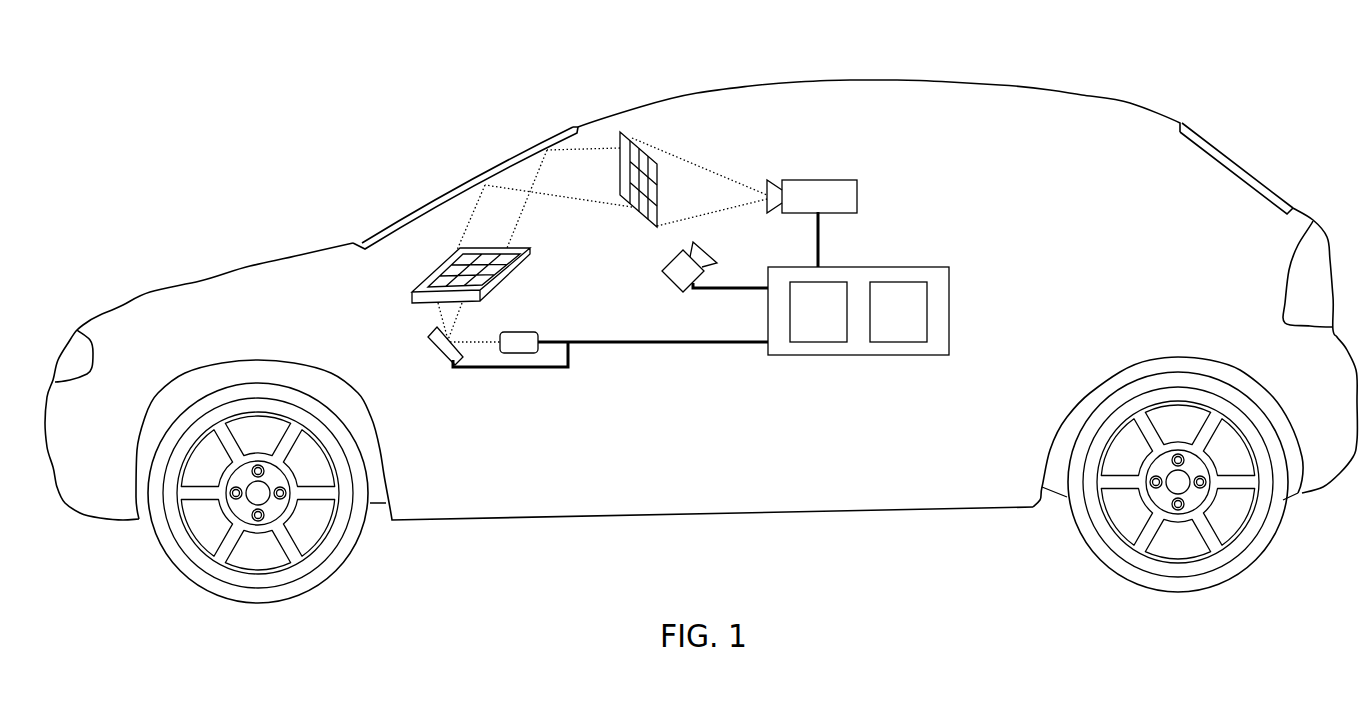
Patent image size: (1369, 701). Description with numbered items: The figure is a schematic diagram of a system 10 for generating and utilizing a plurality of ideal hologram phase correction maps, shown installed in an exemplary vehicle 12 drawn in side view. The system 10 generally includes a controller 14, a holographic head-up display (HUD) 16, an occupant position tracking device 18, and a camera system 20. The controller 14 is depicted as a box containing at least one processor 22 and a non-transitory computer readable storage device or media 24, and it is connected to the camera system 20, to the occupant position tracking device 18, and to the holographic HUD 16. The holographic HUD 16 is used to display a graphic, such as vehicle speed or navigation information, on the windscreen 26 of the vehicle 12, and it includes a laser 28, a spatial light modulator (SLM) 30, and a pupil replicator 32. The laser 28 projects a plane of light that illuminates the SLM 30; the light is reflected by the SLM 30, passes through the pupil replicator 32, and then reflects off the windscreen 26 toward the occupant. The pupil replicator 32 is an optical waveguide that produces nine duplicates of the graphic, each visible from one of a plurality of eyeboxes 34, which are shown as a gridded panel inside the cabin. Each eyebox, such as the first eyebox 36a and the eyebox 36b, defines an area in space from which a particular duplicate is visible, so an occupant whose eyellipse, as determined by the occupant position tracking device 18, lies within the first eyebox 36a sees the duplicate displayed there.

The system 10 is at (422, 183).
The vehicle 12 is at (1082, 95).
The controller 14 is at (949, 355).
The holographic head-up display (HUD) 16 is at (377, 297).
The occupant position tracking device 18 is at (667, 280).
The camera system 20 is at (832, 206).
The processor 22 is at (831, 325).
The non-transitory computer readable storage device or media 24 is at (912, 325).
The windscreen 26 is at (548, 142).
The laser 28 is at (522, 337).
The spatial light modulator (SLM) 30 is at (430, 350).
The pupil replicator 32 is at (512, 273).
The plurality of eyeboxes 34 is at (652, 137).
The first eyebox 36a is at (637, 212).
The eyebox 36b is at (648, 220).